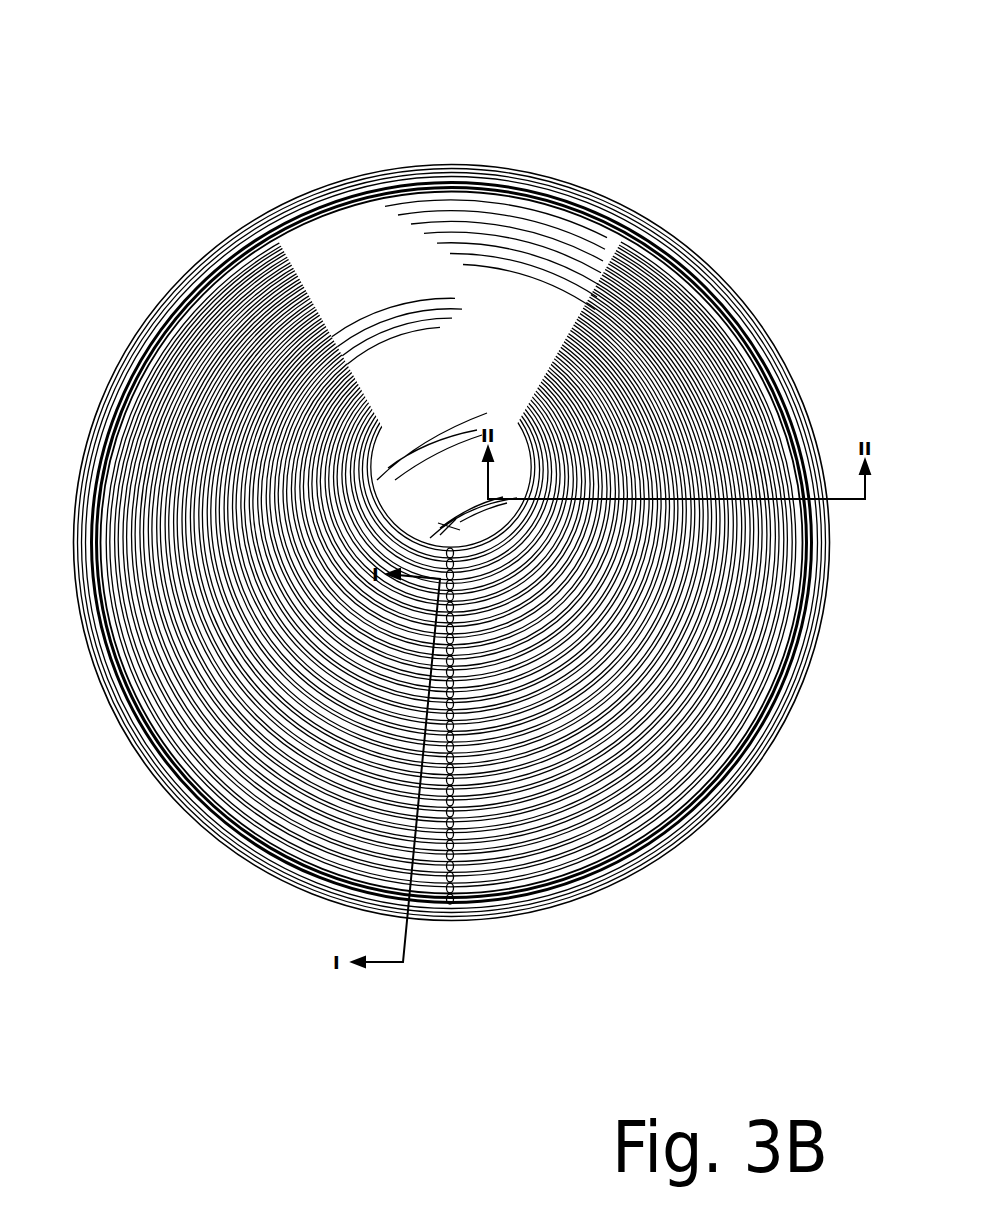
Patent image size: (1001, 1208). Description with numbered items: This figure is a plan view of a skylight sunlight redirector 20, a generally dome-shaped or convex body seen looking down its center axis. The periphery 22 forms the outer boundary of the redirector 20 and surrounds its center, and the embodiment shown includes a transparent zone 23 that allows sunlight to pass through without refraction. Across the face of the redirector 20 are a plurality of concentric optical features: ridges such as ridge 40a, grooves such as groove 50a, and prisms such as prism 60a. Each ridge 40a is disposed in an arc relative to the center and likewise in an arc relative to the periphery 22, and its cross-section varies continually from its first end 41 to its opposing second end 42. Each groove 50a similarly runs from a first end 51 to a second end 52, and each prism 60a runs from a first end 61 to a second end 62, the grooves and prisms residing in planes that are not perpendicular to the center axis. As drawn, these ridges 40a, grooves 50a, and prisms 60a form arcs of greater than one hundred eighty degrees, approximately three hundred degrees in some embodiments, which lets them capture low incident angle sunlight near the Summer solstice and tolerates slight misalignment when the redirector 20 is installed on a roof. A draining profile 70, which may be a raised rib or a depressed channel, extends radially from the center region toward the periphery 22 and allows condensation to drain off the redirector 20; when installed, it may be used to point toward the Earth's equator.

The redirector 20 is at (198, 40).
The periphery 22 is at (638, 216).
The transparent zone 23 is at (458, 200).
The ridge 40a is at (277, 793).
The first end 41 is at (600, 283).
The second end 42 is at (303, 281).
The groove 50a is at (277, 730).
The first end 51 is at (590, 303).
The second end 52 is at (316, 310).
The prism 60a is at (287, 667).
The first end 61 is at (572, 330).
The second end 62 is at (335, 330).
The draining profile 70 is at (597, 892).